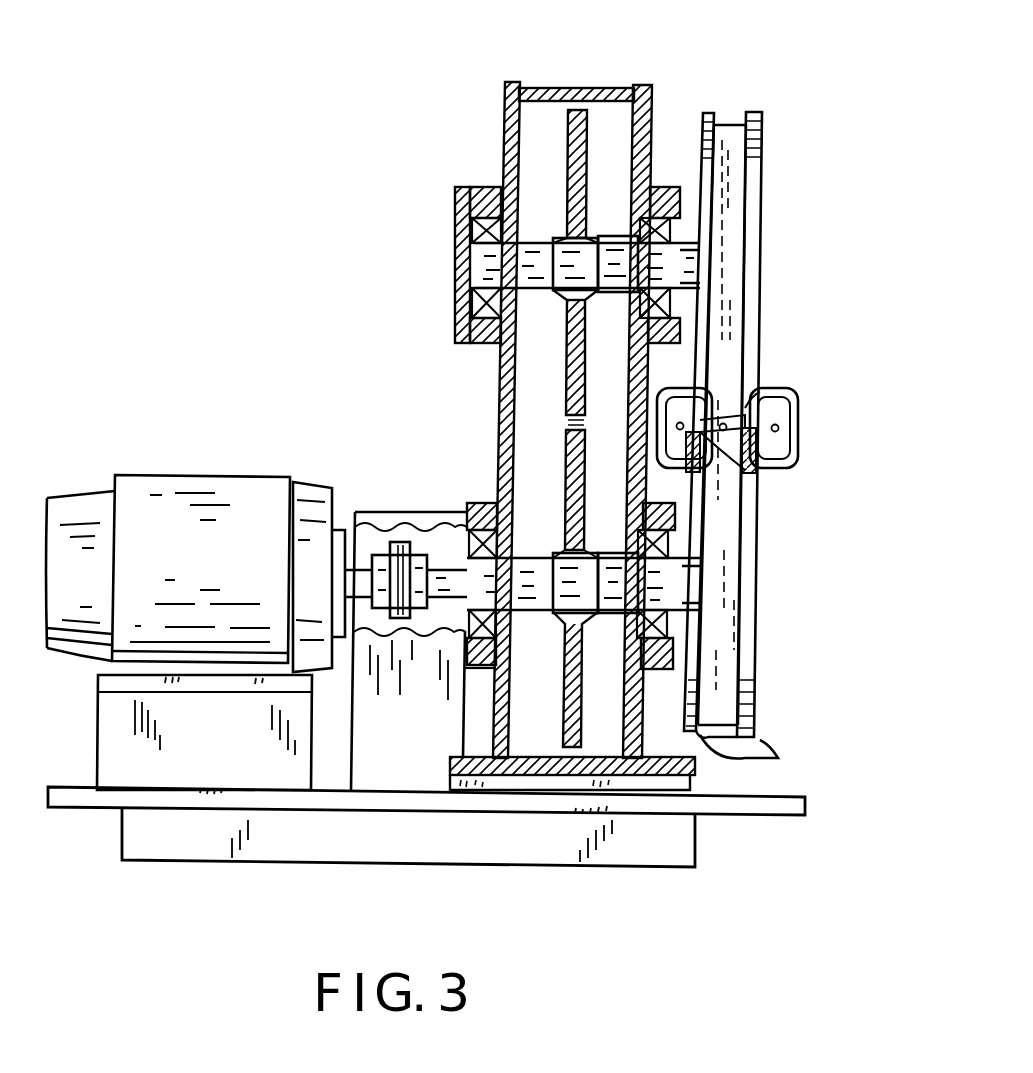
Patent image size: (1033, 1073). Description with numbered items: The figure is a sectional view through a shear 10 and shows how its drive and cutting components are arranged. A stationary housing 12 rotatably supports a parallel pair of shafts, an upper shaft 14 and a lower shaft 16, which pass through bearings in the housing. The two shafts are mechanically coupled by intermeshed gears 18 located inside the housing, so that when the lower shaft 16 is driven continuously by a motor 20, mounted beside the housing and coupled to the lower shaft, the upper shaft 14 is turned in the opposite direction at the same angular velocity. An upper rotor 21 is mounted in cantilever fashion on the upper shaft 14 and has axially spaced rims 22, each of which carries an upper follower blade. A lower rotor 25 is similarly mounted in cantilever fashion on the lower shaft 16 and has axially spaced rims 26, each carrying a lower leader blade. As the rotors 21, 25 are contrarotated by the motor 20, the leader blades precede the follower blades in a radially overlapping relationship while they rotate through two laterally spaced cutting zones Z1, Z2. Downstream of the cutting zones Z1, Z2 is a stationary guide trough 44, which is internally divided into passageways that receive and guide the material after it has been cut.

The shear 10 is at (335, 145).
The stationary housing 12 is at (505, 112).
The upper shaft 14 is at (537, 243).
The lower shaft 16 is at (535, 558).
The intermeshed gears 18 is at (563, 440).
The motor 20 is at (214, 475).
The upper rotor 21 is at (728, 125).
The rims 22 is at (705, 112).
The lower rotor 25 is at (737, 655).
The rims 26 is at (778, 758).
The stationary guide trough 44 is at (810, 418).
The cutting zone Z1 is at (760, 392).
The cutting zone Z2 is at (712, 434).